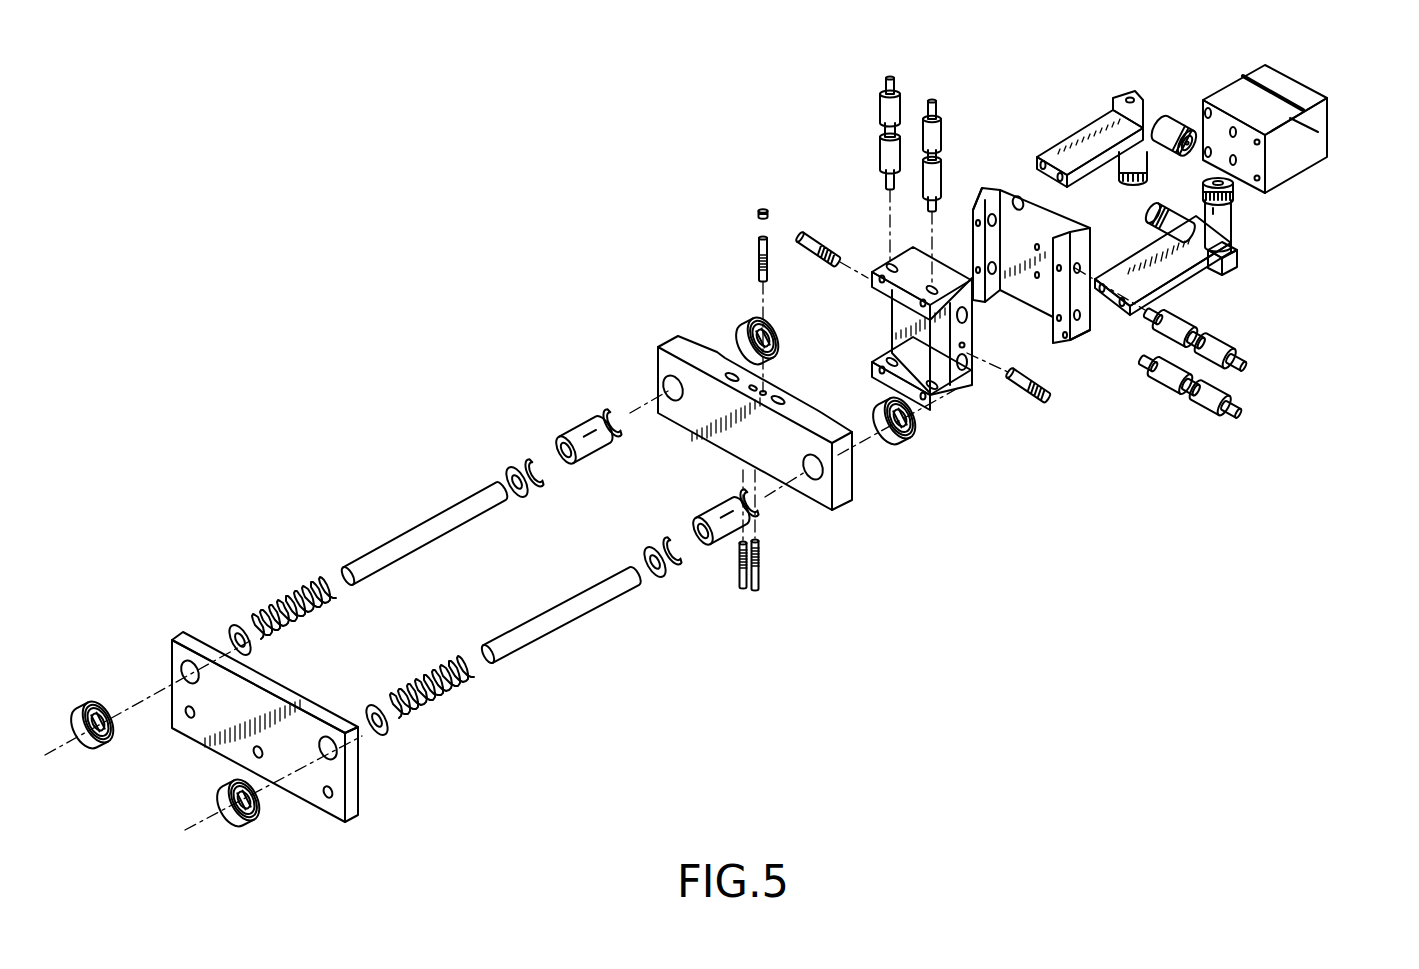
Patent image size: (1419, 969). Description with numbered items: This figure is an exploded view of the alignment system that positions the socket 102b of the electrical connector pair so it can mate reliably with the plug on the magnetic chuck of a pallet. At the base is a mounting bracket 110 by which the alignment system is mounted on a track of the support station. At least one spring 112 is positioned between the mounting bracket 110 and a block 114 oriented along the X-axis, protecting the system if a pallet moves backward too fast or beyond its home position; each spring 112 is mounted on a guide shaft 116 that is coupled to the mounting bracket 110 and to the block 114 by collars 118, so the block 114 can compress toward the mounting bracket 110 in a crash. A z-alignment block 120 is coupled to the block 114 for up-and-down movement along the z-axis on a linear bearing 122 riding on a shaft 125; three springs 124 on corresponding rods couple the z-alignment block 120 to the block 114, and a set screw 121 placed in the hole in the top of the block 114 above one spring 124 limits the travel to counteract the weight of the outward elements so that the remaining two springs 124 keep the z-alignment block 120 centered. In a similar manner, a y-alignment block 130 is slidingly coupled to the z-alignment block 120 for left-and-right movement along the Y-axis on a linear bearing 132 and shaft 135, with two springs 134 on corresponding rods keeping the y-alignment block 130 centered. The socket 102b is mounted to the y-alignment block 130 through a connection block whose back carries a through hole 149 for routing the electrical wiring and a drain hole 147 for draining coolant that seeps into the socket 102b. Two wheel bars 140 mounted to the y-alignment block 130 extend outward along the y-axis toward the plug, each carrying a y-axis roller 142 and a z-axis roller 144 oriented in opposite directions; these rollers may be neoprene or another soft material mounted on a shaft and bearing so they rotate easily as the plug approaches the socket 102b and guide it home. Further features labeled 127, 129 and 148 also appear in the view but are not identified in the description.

The socket 102b is at (1318, 122).
The mounting bracket 110 is at (355, 772).
The spring 112 is at (300, 600).
The block 114 is at (678, 350).
The guide shaft 116 is at (415, 533).
The collars 118 is at (97, 705).
The z-alignment block 120 is at (948, 398).
The set screw 121 is at (760, 207).
The linear bearing 122 is at (885, 112).
The springs 124 is at (758, 275).
The shaft 125 is at (885, 90).
The hole 127 is at (890, 265).
The hole 129 is at (965, 312).
The y-alignment block 130 is at (1000, 188).
The linear bearing 132 is at (1215, 340).
The springs 134 is at (1075, 328).
The shaft 135 is at (1152, 318).
The wheel bars 140 is at (1097, 135).
The y-axis roller 142 is at (1172, 125).
The z-axis roller 144 is at (1128, 165).
The drain hole 147 is at (1258, 145).
The housing face 148 is at (1280, 150).
The through hole 149 is at (1258, 181).